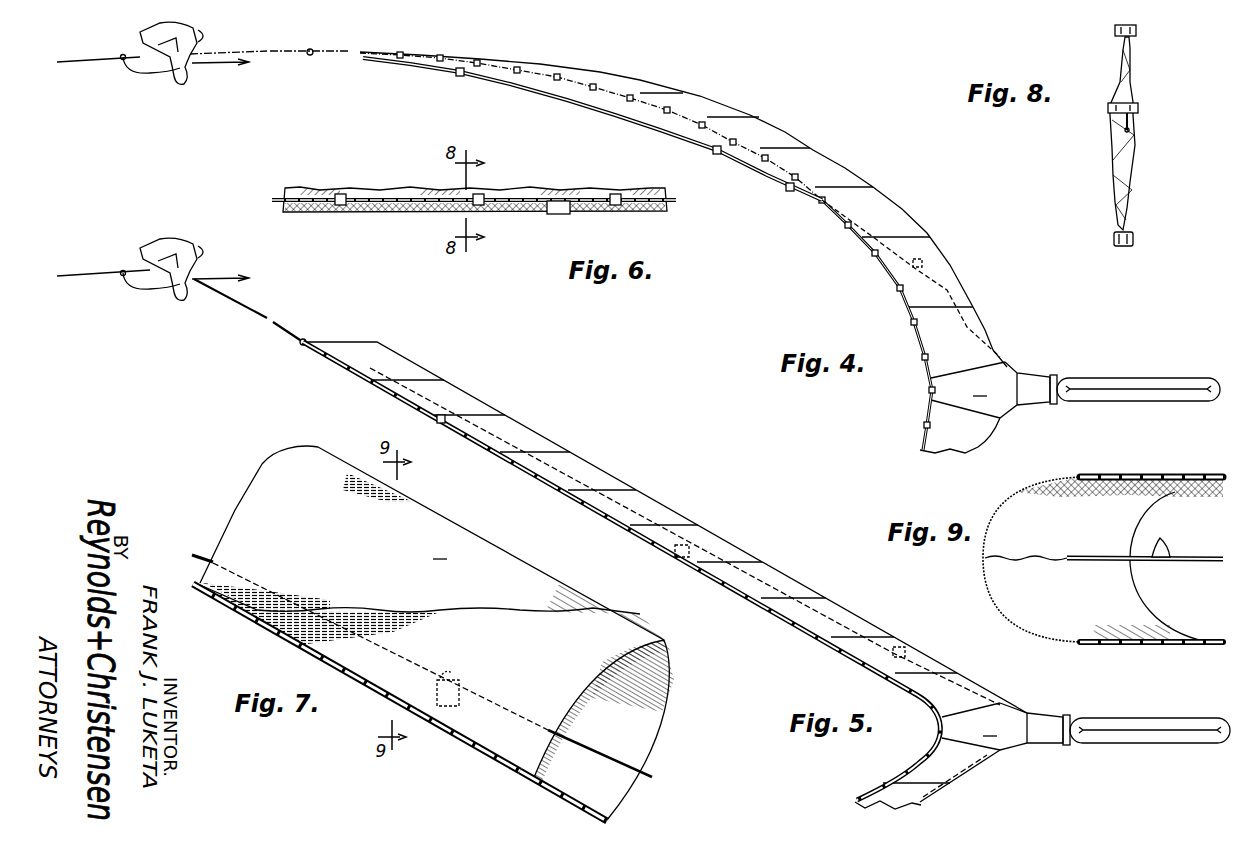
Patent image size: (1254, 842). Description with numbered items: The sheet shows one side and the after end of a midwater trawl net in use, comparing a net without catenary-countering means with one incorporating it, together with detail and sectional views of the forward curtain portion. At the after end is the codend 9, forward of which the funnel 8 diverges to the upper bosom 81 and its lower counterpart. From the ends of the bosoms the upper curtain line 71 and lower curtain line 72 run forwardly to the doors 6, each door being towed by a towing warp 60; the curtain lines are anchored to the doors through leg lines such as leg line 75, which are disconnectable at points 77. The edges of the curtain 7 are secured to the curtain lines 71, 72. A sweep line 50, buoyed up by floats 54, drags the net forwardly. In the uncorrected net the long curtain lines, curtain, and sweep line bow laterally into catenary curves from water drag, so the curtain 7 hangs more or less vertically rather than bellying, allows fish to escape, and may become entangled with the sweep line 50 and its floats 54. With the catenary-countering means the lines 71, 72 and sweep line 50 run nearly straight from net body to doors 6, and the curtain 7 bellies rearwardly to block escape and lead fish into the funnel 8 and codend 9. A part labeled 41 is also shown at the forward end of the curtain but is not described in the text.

In FIG. 4, the door 6 is at (165, 30).
In FIG. 5, the door 6 is at (163, 255).
In FIG. 4, the curtain 7 is at (640, 80).
In FIG. 5, the curtain 7 is at (664, 504).
In FIG. 6, the curtain 7 is at (505, 190).
In FIG. 7, the curtain 7 is at (437, 633).
In FIG. 9, the curtain 7 is at (1022, 509).
In FIG. 4, the funnel 8 is at (1034, 380).
In FIG. 5, the funnel 8 is at (1053, 717).
In FIG. 4, the codend 9 is at (1135, 377).
In FIG. 5, the codend 9 is at (1140, 738).
In FIG. 7, the stub rod 41 is at (230, 606).
In FIG. 4, the sweep line 50 is at (567, 102).
In FIG. 5, the sweep line 50 is at (782, 585).
In FIG. 7, the sweep line 50 is at (653, 776).
In FIG. 8, the sweep line 50 is at (1130, 129).
In FIG. 9, the sweep line 50 is at (1183, 564).
In FIG. 4, the float 54 is at (460, 77).
In FIG. 5, the float 54 is at (441, 423).
In FIG. 6, the float 54 is at (549, 215).
In FIG. 7, the float 54 is at (443, 708).
In FIG. 8, the float 54 is at (1133, 103).
In FIG. 9, the float 54 is at (1162, 546).
In FIG. 4, the towing warp 60 is at (95, 63).
In FIG. 5, the towing warp 60 is at (86, 275).
In FIG. 4, the upper curtain line 71 is at (585, 85).
In FIG. 5, the upper curtain line 71 is at (558, 486).
In FIG. 6, the upper curtain line 71 is at (383, 193).
In FIG. 7, the upper curtain line 71 is at (293, 641).
In FIG. 8, the upper curtain line 71 is at (1122, 42).
In FIG. 9, the upper curtain line 71 is at (1137, 473).
In FIG. 7, the lower curtain line 72 is at (543, 790).
In FIG. 8, the lower curtain line 72 is at (1125, 229).
In FIG. 9, the lower curtain line 72 is at (1155, 643).
In FIG. 4, the leg line 75 is at (283, 50).
In FIG. 5, the leg line 75 is at (248, 303).
In FIG. 4, the disconnectable point 77 is at (737, 117).
In FIG. 5, the disconnectable point 77 is at (513, 452).
In FIG. 7, the disconnectable point 77 is at (407, 609).
In FIG. 4, the upper bosom 81 is at (927, 398).
In FIG. 5, the upper bosom 81 is at (941, 724).